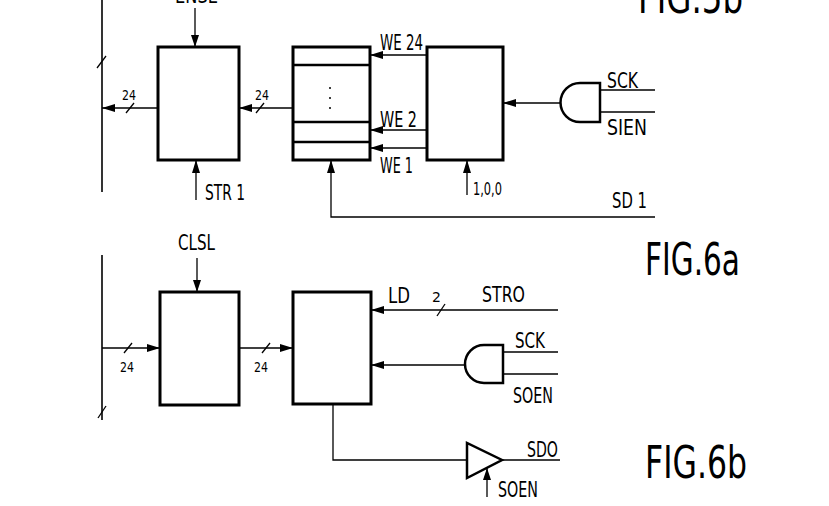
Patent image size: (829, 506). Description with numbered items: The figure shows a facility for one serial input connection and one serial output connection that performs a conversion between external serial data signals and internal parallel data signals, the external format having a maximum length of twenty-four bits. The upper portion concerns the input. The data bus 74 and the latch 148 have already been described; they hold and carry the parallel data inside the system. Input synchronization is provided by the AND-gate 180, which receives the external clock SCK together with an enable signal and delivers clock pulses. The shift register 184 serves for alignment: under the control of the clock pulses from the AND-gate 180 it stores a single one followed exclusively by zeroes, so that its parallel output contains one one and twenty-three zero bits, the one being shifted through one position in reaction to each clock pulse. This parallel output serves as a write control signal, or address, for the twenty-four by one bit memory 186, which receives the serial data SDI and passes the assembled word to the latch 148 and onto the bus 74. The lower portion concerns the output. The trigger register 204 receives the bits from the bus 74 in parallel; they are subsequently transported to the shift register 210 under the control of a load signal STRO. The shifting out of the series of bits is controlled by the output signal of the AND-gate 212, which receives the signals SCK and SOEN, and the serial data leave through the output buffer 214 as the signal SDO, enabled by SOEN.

In FIG. 6a, the data bus 74 is at (102, 147).
In FIG. 6b, the data bus 74 is at (102, 275).
In FIG. 6a, the latch 148 is at (227, 160).
In FIG. 6a, the 24×1 bit memory 186 is at (336, 47).
In FIG. 6a, the shift register 184 is at (471, 47).
In FIG. 6a, the AND-gate 180 is at (589, 62).
In FIG. 6b, the trigger register 204 is at (213, 292).
In FIG. 6b, the shift register 210 is at (340, 292).
In FIG. 6b, the AND-gate 212 is at (484, 384).
In FIG. 6b, the output buffer 214 is at (480, 443).